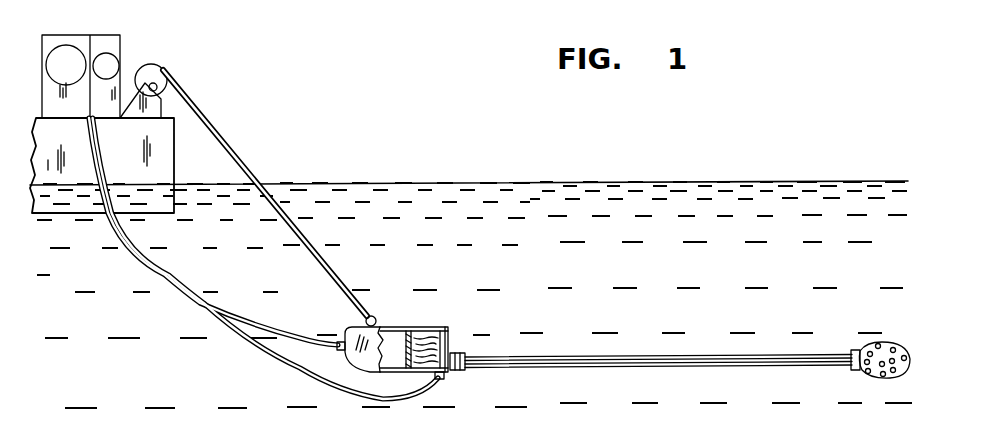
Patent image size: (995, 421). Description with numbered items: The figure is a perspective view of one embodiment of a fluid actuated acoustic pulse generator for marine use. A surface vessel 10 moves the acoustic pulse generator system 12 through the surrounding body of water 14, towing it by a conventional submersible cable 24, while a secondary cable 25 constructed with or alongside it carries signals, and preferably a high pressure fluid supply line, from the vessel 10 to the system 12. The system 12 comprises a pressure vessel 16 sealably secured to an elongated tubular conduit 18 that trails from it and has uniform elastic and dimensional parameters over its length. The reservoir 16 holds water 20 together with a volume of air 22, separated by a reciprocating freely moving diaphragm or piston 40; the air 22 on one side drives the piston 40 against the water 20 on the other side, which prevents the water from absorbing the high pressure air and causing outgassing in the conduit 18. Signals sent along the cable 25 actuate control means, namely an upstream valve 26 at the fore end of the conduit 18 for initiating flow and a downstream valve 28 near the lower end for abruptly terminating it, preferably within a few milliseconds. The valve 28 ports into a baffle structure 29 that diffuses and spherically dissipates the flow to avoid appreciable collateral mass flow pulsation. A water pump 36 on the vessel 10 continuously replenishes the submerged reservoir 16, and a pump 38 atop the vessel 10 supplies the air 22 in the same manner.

The surface vessel 10 is at (114, 149).
The acoustic pulse generator system 12 is at (429, 343).
The body of water 14 is at (695, 276).
The pressure vessel 16 is at (377, 358).
The conduit 18 is at (611, 368).
The water 20 is at (464, 328).
The air 22 is at (394, 342).
The cable 24 is at (231, 148).
The secondary cable 25 is at (174, 271).
The upstream valve 26 is at (452, 371).
The downstream valve 28 is at (858, 371).
The baffle structure 29 is at (878, 375).
The water pump 36 is at (63, 58).
The pump 38 is at (115, 56).
The piston 40 is at (400, 367).